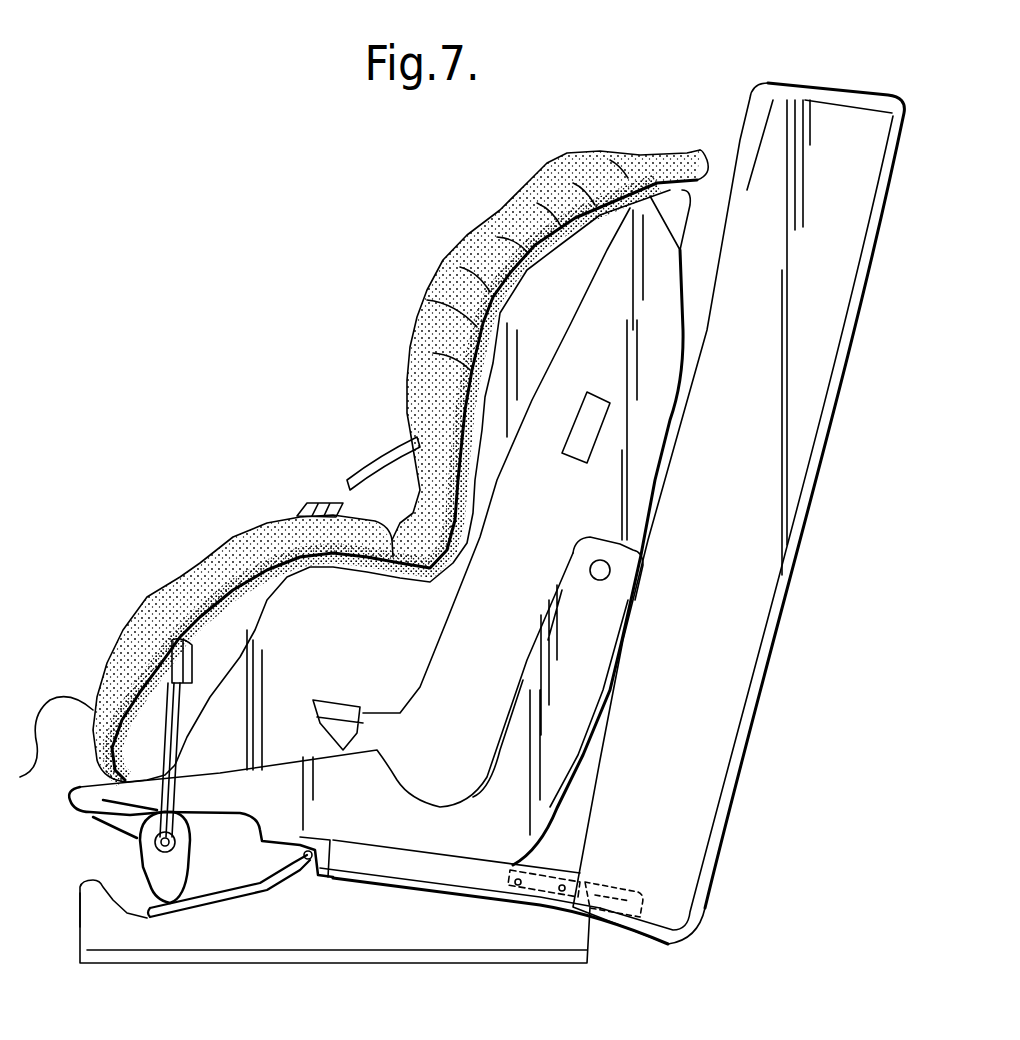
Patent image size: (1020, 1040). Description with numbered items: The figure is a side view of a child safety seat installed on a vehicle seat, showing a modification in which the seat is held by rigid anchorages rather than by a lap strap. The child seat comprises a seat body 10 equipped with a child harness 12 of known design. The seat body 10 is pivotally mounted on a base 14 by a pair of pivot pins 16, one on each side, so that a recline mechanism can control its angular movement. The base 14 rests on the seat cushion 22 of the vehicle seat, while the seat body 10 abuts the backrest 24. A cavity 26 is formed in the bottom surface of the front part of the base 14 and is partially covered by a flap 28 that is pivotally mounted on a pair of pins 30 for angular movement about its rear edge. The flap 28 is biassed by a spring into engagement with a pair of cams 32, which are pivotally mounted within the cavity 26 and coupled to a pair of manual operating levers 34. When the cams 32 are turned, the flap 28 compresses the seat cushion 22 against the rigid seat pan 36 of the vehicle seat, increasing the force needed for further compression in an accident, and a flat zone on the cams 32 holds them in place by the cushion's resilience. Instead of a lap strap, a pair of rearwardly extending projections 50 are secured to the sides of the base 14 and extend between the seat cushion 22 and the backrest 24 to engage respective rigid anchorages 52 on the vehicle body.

The seat body 10 is at (650, 173).
The child harness 12 is at (318, 505).
The base 14 is at (557, 750).
The pivot pins 16 is at (610, 570).
The seat cushion 22 is at (370, 957).
The backrest 24 is at (785, 120).
The cavity 26 is at (222, 857).
The flap 28 is at (250, 890).
The pins 30 is at (308, 866).
The cams 32 is at (143, 870).
The manual operating levers 34 is at (180, 637).
The rigid seat pan 36 is at (165, 957).
The rearwardly extending projections 50 is at (540, 893).
The rigid anchorages 52 is at (637, 933).